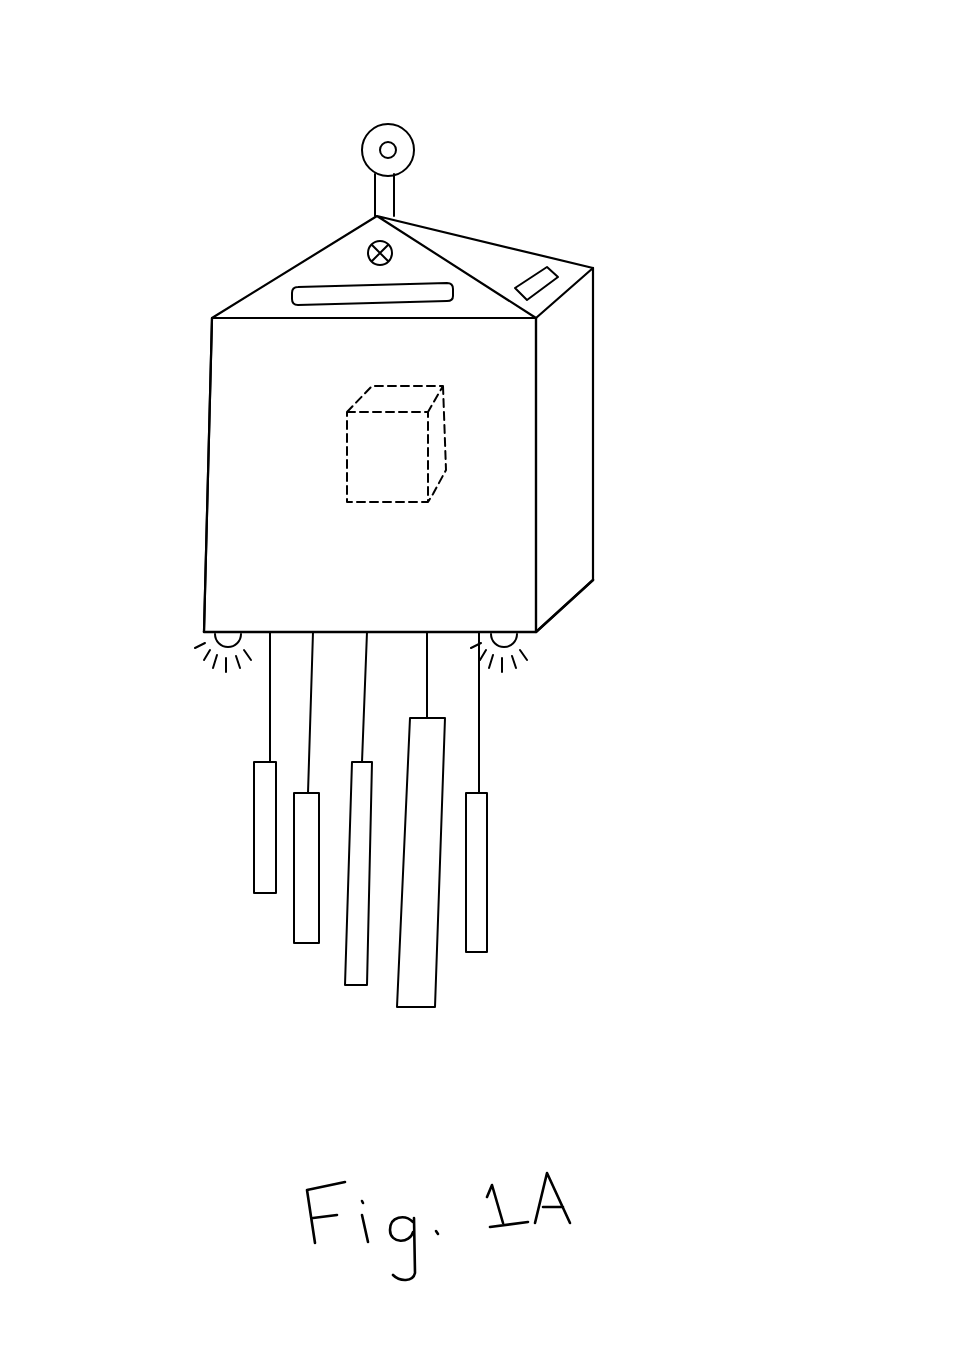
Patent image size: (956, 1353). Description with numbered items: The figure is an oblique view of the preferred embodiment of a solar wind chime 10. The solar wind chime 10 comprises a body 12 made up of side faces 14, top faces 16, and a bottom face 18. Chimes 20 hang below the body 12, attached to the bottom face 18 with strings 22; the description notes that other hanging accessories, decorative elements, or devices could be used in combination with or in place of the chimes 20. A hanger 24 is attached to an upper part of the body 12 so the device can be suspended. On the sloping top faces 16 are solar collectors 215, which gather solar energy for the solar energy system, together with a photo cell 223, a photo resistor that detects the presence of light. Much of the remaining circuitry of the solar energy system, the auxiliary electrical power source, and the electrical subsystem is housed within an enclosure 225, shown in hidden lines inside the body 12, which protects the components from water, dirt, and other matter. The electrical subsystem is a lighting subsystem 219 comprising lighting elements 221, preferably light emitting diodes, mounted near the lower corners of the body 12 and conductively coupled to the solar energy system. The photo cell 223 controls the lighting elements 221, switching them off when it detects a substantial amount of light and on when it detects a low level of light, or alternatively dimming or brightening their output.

The solar wind chime 10 is at (705, 178).
The body 12 is at (602, 382).
The side faces 14 is at (273, 522).
The top faces 16 is at (340, 262).
The bottom face 18 is at (548, 616).
The chimes 20 is at (362, 967).
The strings 22 is at (365, 705).
The hanger 24 is at (397, 122).
The solar collectors 215 is at (318, 293).
The lighting subsystem 219 is at (197, 610).
The lighting elements 221 is at (200, 637).
The photo cell 223 is at (398, 240).
The enclosure 225 is at (380, 458).